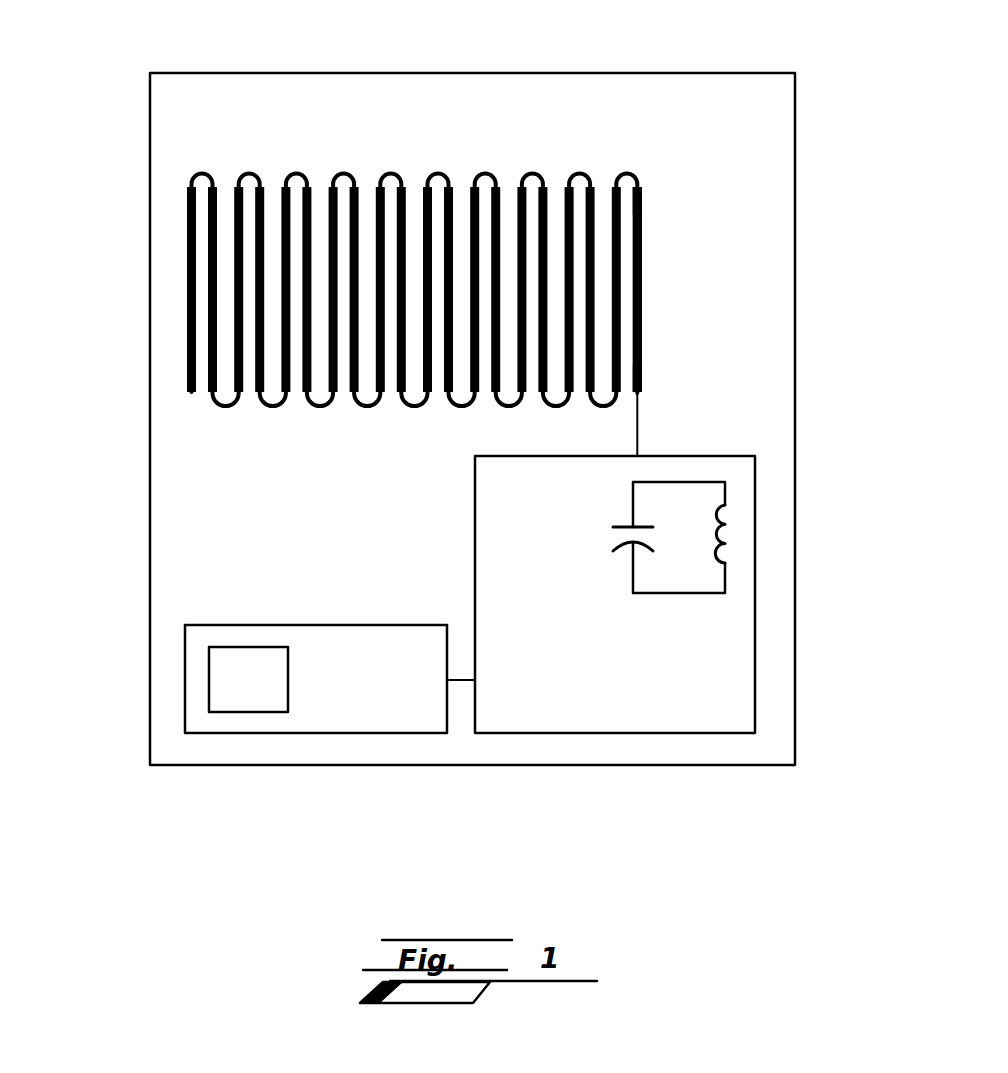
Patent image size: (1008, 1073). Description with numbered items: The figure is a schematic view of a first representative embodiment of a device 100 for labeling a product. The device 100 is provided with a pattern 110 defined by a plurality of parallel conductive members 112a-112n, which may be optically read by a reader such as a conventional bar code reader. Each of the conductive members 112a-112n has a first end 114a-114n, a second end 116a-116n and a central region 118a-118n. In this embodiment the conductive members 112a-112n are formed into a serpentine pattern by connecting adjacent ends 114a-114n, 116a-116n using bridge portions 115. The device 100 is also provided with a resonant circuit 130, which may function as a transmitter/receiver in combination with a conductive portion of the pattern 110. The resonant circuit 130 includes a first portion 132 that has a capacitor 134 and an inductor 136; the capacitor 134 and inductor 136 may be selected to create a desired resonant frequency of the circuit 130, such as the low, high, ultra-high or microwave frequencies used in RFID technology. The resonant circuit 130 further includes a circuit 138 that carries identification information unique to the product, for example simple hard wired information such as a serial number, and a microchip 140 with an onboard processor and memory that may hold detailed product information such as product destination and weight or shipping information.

The device 100 is at (658, 37).
The pattern 110 is at (466, 296).
The conductive member 112a is at (172, 233).
The conductive member 112n is at (656, 302).
The first end 114a is at (187, 187).
The first end 114n is at (642, 202).
The bridge portion 115 is at (273, 407).
The second end 116a is at (187, 390).
The second end 116n is at (642, 373).
The central region 118a is at (187, 272).
The central region 118n is at (642, 247).
The resonant circuit 130 is at (360, 440).
The first portion 132 is at (660, 661).
The capacitor 134 is at (615, 537).
The inductor 136 is at (727, 530).
The circuit 138 is at (315, 737).
The microchip 140 is at (289, 682).